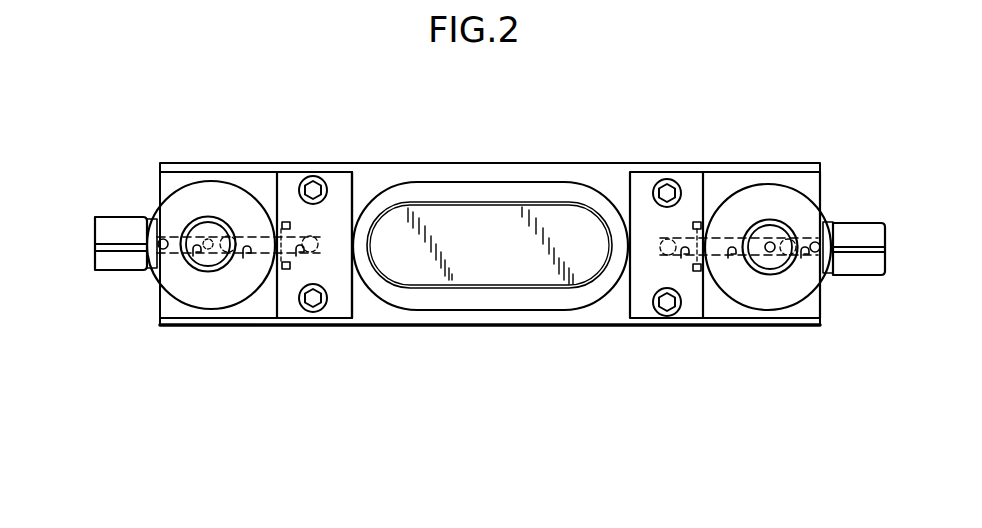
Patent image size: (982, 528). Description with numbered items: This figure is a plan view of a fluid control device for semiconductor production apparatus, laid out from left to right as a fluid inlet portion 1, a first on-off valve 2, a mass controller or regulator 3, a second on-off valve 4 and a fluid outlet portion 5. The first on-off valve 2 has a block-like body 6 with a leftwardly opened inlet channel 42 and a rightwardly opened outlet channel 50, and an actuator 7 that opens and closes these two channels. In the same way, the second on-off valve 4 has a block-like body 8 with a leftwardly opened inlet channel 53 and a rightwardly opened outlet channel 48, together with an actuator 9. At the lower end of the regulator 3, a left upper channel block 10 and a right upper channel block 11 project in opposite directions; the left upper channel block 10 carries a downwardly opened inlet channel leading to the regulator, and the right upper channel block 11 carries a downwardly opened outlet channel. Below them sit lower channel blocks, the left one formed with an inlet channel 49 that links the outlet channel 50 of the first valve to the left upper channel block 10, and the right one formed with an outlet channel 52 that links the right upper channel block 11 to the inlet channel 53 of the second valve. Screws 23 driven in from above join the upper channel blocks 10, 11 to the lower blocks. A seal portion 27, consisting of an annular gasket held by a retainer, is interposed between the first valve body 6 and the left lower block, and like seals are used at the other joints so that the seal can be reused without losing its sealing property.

The fluid inlet portion 1 is at (117, 228).
The first on-off valve 2 is at (258, 178).
The mass controller (regulator) 3 is at (537, 192).
The second on-off valve 4 is at (800, 187).
The fluid outlet portion 5 is at (866, 222).
The block-like body 6 is at (172, 176).
The actuator 7 is at (216, 228).
The block-like body 8 is at (716, 183).
The actuator 9 is at (770, 228).
The left upper channel block 10 is at (356, 182).
The right upper channel block 11 is at (637, 190).
The screws 23 is at (318, 180).
The seal portion 27 is at (262, 272).
The inlet channel 42 is at (178, 283).
The outlet channel 48 is at (820, 322).
The inlet channel 49 is at (290, 268).
The outlet channel 50 is at (222, 262).
The outlet channel 52 is at (685, 290).
The inlet channel 53 is at (748, 330).